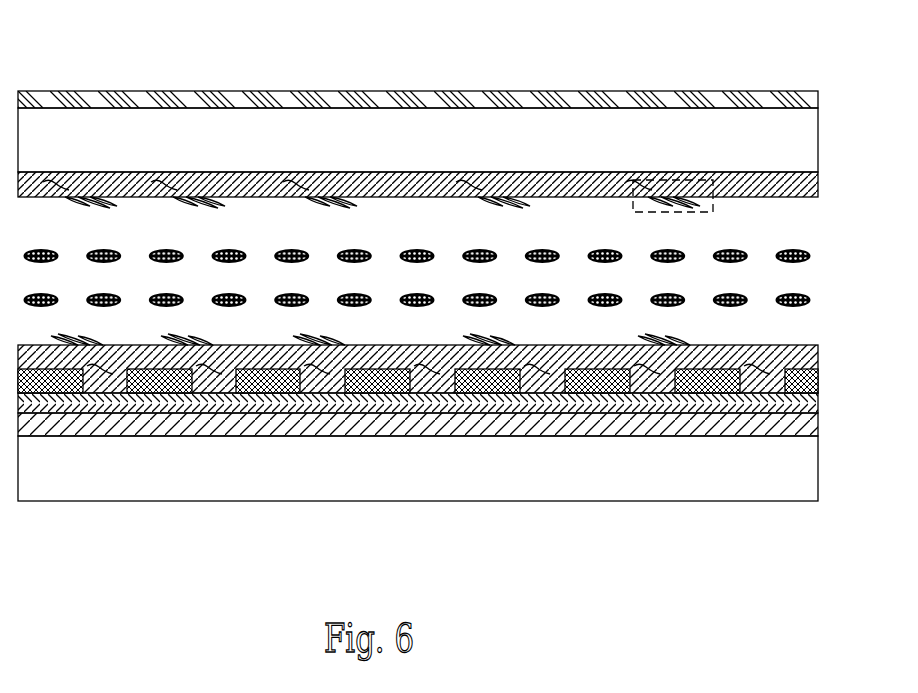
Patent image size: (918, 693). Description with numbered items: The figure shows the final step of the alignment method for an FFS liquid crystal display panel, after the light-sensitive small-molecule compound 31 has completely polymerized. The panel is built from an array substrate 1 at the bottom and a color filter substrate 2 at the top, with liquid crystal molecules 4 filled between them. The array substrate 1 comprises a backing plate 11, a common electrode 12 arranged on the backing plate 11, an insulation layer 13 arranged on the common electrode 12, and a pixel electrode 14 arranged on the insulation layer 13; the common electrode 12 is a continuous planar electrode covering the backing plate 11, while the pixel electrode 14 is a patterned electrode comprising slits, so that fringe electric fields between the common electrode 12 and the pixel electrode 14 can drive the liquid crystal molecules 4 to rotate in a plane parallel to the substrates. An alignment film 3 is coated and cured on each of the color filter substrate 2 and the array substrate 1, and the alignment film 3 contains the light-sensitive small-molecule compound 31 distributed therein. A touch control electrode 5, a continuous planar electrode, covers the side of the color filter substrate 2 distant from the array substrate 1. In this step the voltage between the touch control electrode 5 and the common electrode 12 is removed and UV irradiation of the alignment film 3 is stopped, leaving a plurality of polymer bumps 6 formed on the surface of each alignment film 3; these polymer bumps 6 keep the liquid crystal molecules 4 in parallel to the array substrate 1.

The array substrate 1 is at (418, 469).
The backing plate 11 is at (583, 546).
The common electrode 12 is at (282, 421).
The insulation layer 13 is at (383, 400).
The pixel electrode 14 is at (588, 393).
The color filter substrate 2 is at (231, 133).
The alignment film 3 is at (334, 177).
The light-sensitive small-molecule compound 31 is at (482, 194).
The liquid crystal molecules 4 is at (800, 256).
The touch control electrode 5 is at (676, 100).
The polymer bumps 6 is at (713, 209).